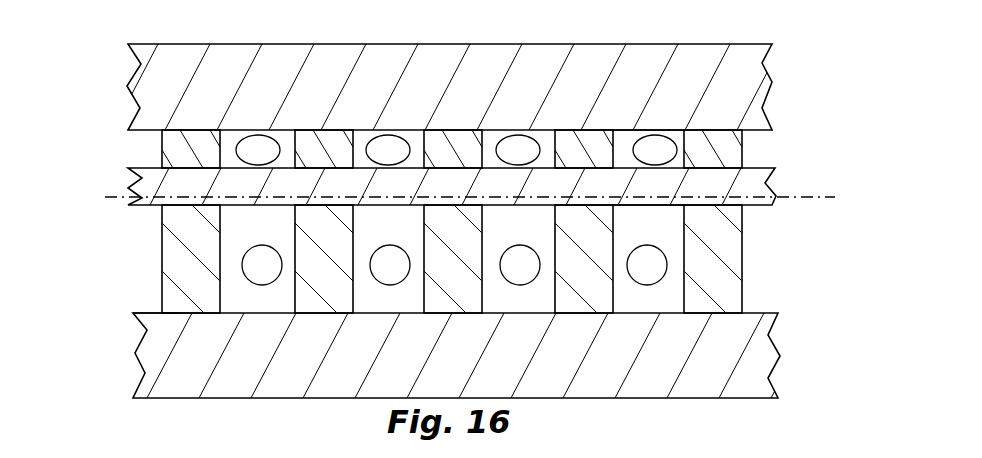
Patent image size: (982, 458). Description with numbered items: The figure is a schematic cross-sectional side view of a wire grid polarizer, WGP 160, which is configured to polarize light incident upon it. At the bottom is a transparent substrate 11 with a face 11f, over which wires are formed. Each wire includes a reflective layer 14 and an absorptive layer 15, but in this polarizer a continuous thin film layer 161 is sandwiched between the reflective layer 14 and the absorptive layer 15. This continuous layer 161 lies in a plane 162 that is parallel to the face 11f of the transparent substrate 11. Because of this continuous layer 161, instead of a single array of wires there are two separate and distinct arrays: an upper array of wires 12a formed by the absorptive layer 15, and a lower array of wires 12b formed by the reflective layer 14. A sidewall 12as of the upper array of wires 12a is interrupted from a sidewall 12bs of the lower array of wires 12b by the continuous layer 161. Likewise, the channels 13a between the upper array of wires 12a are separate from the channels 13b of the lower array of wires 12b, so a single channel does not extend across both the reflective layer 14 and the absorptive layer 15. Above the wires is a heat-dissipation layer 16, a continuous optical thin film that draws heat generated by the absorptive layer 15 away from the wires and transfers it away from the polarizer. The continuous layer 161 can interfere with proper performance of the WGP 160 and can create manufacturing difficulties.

The WGP 160 is at (72, 336).
The heat-dissipation layer 16 is at (441, 94).
The upper array of wires 12a is at (108, 156).
The absorptive layer 15 is at (180, 157).
The channels 13a is at (456, 150).
The sidewall 12as is at (617, 145).
The continuous layer 161 is at (435, 191).
The plane 162 is at (798, 193).
The lower array of wires 12b is at (107, 247).
The reflective layer 14 is at (180, 276).
The channels 13b is at (454, 265).
The sidewall 12bs is at (618, 243).
The transparent substrate 11 is at (440, 366).
The face 11f is at (153, 311).